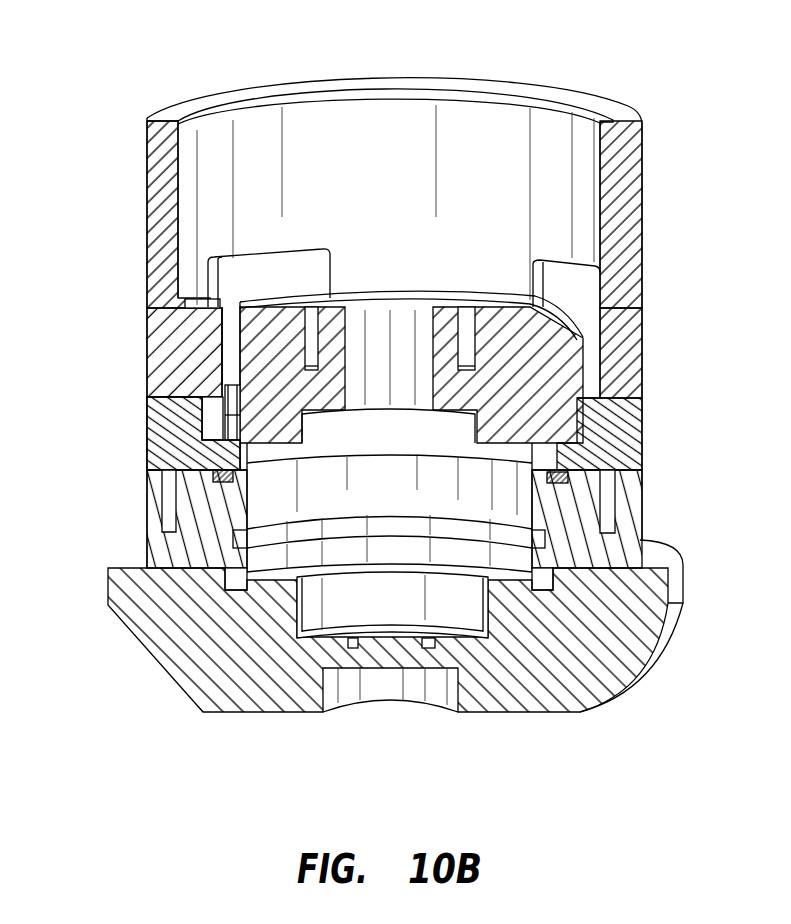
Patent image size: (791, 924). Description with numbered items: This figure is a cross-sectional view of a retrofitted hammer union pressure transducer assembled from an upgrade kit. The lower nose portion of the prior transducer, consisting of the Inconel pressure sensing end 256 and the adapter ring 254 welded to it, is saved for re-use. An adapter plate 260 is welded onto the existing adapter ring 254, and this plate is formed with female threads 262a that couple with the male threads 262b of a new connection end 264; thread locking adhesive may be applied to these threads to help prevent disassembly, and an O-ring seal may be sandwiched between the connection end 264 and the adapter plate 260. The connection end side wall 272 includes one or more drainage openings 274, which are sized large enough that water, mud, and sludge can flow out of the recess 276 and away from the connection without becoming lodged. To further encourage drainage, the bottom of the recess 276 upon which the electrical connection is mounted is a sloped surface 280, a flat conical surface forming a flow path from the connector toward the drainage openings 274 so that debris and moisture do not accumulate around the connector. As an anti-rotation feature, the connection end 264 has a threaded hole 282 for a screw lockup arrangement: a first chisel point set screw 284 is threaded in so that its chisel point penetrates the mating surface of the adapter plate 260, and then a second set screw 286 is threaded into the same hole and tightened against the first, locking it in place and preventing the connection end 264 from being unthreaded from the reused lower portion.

The adapter ring 254 is at (643, 516).
The pressure sensing end 256 is at (653, 643).
The adapter plate 260 is at (148, 443).
The female threads 262a is at (657, 434).
The male threads 262b is at (566, 428).
The connection end 264 is at (644, 352).
The connection end side wall 272 is at (612, 155).
The drainage openings 274 is at (260, 267).
The recess 276 is at (472, 118).
The sloped surface 280 is at (600, 332).
The threaded hole 282 is at (236, 383).
The first chisel point set screw 284 is at (226, 443).
The second set screw 286 is at (238, 413).